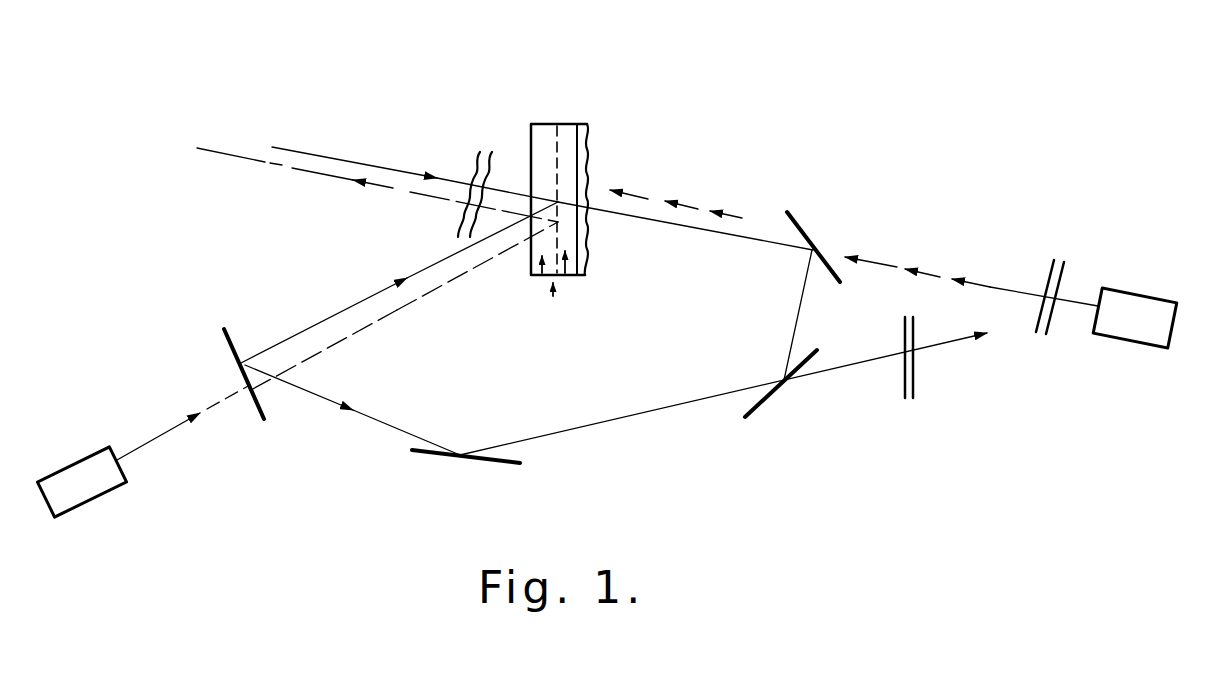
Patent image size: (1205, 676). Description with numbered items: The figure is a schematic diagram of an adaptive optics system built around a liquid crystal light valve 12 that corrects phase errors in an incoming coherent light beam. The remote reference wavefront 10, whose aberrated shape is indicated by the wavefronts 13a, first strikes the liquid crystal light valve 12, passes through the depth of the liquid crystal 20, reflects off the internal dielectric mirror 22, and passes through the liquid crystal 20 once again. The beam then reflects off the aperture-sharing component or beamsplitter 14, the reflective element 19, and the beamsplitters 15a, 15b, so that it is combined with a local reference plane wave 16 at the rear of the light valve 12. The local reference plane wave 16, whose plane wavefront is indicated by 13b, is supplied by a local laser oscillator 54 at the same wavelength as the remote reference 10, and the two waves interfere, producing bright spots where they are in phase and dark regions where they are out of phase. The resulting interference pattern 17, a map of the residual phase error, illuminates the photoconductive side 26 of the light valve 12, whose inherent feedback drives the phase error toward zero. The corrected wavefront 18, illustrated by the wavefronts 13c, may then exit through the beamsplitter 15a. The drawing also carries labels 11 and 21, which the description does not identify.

The remote reference wavefront 10 is at (333, 157).
The reference beam path 11 is at (227, 156).
The liquid crystal light valve 12 is at (562, 95).
The aberrated wavefronts 13a is at (491, 133).
The plane wavefront 13b is at (1063, 254).
The corrected wavefronts 13c is at (923, 337).
The aperture-sharing component 14 is at (222, 332).
The beamsplitter 15a is at (770, 400).
The beamsplitter 15b is at (806, 231).
The local reference plane wave 16 is at (737, 216).
The interference pattern 17 is at (588, 128).
The corrected wavefront 18 is at (948, 345).
The reflective element 19 is at (497, 463).
The liquid crystal 20 is at (540, 277).
The laser 21 is at (107, 446).
The internal dielectric mirror 22 is at (551, 304).
The photoconductive side 26 is at (572, 277).
The local laser oscillator 54 is at (1093, 333).